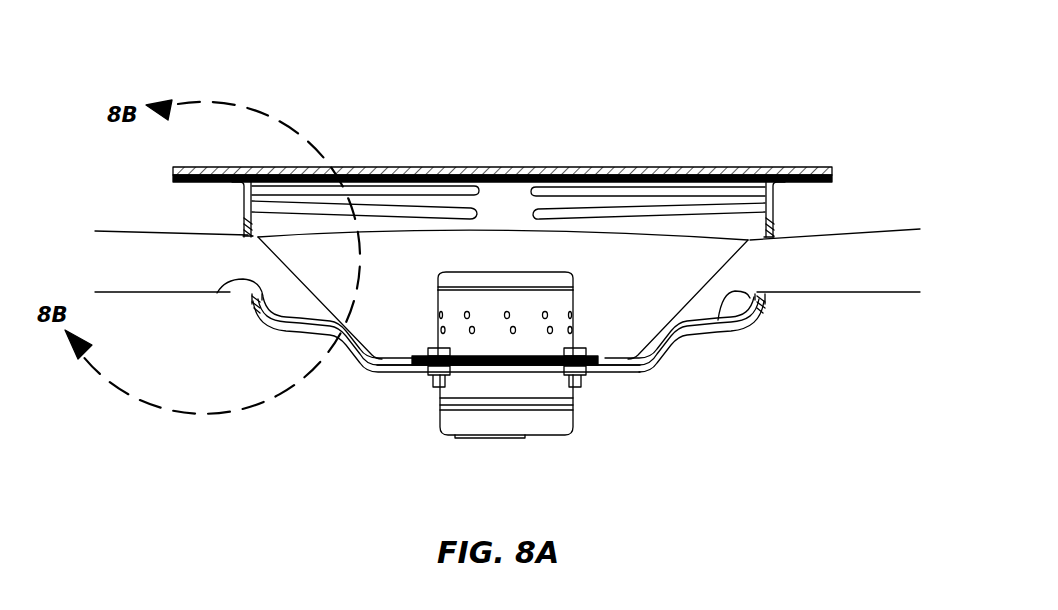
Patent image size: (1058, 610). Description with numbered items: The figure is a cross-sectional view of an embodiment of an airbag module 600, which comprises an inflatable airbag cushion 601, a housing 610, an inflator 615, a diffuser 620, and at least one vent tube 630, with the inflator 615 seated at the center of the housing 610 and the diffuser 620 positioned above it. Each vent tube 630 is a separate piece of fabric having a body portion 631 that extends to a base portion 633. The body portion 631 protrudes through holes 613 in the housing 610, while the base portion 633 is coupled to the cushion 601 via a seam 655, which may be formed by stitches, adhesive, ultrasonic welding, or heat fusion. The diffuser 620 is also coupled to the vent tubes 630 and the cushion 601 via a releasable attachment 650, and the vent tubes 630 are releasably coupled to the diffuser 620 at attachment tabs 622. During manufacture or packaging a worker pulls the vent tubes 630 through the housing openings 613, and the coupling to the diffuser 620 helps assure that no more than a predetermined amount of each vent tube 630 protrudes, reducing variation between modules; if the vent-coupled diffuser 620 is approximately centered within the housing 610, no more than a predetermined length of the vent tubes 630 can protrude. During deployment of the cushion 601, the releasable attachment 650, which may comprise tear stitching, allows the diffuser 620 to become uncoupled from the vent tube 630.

The airbag module 600 is at (529, 82).
The inflatable airbag cushion 601 is at (244, 180).
The housing 610 is at (730, 332).
The holes 613 is at (243, 307).
The inflator 615 is at (487, 345).
The diffuser 620 is at (550, 245).
The attachment tabs 622 is at (258, 236).
The vent tube 630 is at (144, 210).
The body portion 631 is at (896, 231).
The base portion 633 is at (773, 185).
The releasable attachment 650 is at (246, 234).
The seam 655 is at (240, 208).